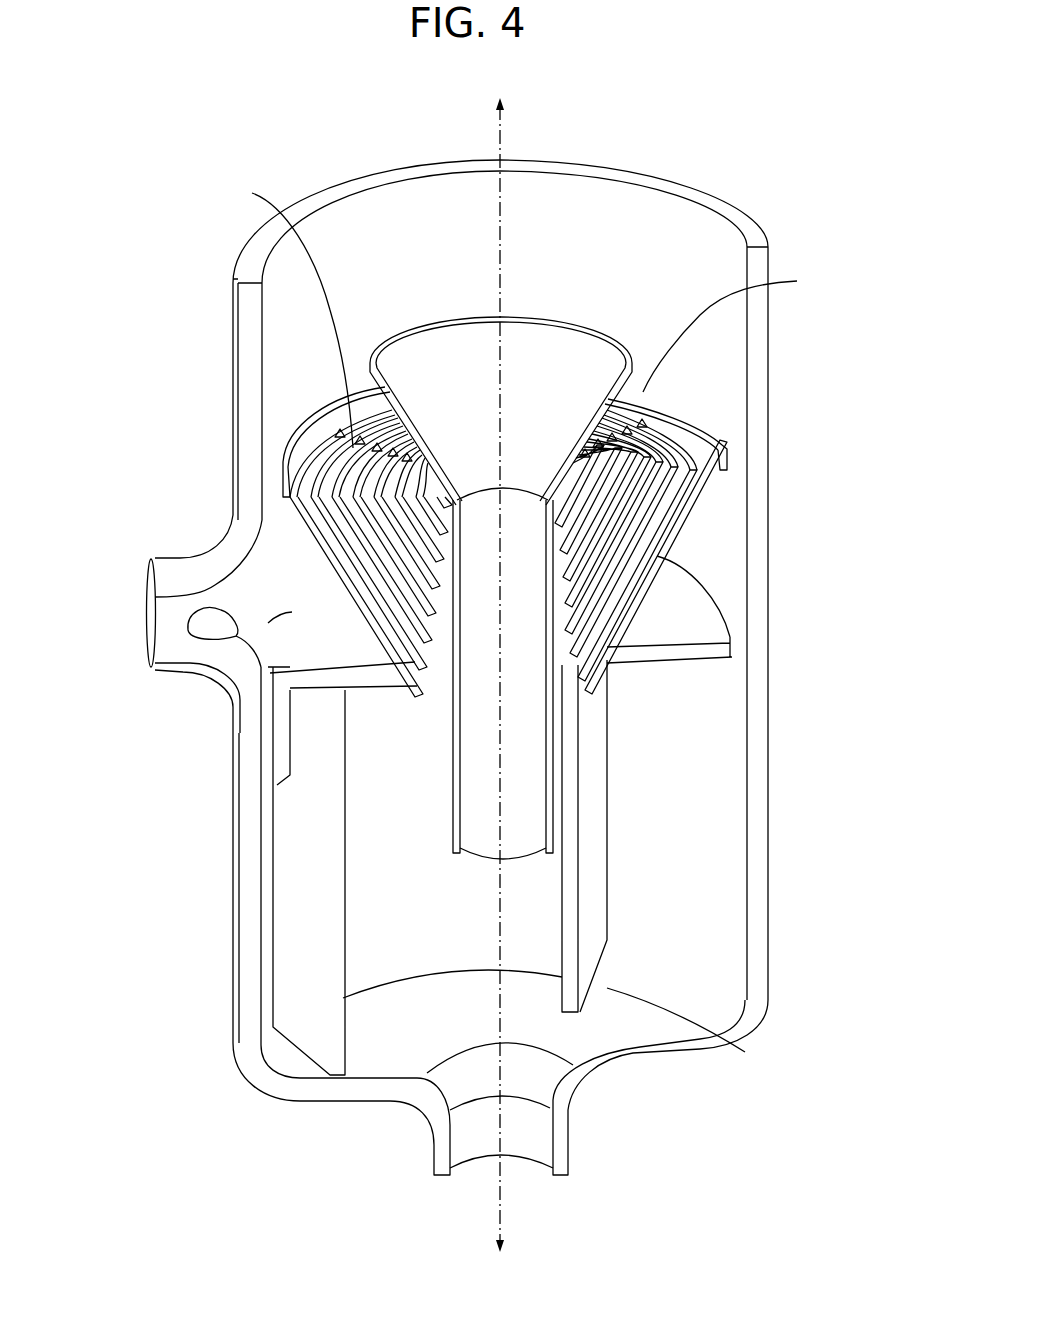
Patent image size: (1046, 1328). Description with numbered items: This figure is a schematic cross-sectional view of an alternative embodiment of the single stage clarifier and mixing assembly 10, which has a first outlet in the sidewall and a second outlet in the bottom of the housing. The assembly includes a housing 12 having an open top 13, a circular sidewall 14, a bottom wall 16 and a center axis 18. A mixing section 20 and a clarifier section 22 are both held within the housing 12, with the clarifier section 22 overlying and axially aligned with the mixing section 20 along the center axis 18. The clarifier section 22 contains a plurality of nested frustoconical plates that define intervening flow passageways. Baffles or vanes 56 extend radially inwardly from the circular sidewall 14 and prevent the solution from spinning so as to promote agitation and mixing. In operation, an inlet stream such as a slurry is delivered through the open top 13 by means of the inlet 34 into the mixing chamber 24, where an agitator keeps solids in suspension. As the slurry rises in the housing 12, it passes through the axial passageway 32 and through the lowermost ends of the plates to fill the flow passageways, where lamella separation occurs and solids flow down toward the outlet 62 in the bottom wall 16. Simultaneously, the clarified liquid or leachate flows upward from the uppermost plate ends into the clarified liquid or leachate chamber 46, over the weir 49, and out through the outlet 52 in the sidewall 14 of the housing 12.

The single stage clarifier and mixing assembly 10 is at (644, 134).
The housing 12 is at (255, 1083).
The open top 13 is at (335, 210).
The circular sidewall 14 is at (230, 880).
The bottom wall 16 is at (650, 1070).
The center axis 18 is at (493, 137).
The mixing section 20 is at (730, 800).
The clarifier section 22 is at (737, 530).
The mixing chamber 24 is at (390, 885).
The axial passageway 32 is at (438, 683).
The inlet 34 is at (550, 378).
The clarified liquid or leachate chamber 46 is at (736, 328).
The weir 49 is at (287, 314).
The outlet 52 is at (150, 620).
The baffles or vanes 56 is at (590, 890).
The outlet 62 is at (527, 1140).